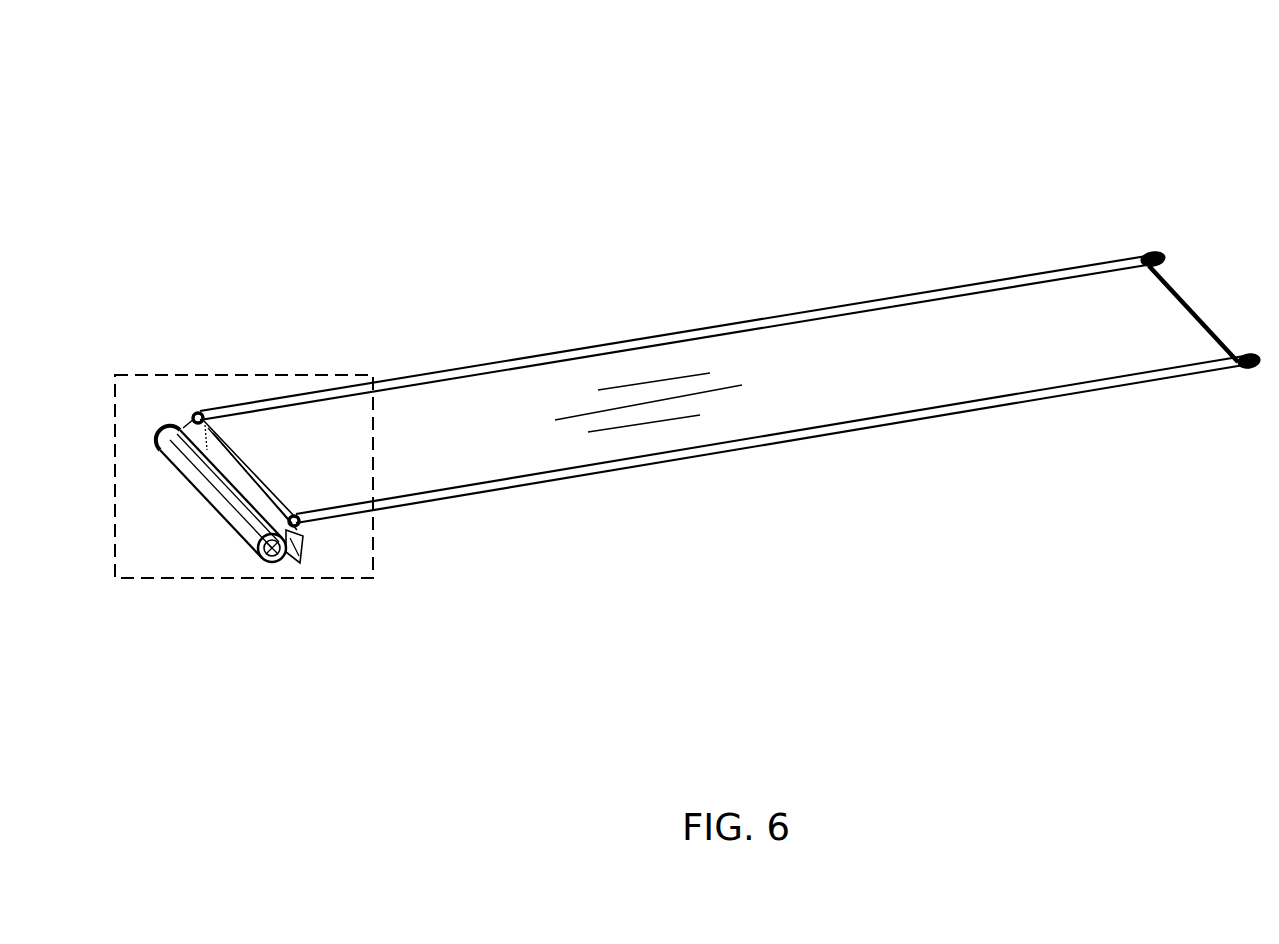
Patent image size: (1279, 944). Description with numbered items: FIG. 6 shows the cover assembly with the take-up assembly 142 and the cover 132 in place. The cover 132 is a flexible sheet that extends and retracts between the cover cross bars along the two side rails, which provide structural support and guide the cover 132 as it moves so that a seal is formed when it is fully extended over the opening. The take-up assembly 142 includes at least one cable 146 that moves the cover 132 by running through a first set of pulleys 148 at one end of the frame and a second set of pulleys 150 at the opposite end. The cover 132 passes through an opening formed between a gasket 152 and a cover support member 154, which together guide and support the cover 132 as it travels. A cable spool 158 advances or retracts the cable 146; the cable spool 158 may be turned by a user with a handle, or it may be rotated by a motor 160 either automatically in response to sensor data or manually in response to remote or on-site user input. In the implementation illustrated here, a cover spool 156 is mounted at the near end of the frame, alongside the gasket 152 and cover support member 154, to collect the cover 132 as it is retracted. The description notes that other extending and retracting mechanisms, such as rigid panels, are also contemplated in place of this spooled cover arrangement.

The take-up assembly 142 is at (516, 166).
The cover 132 is at (950, 290).
The cable 146 is at (763, 319).
The first set of pulleys 148 is at (195, 414).
The second set of pulleys 150 is at (1158, 254).
The gasket 152 is at (247, 440).
The cover support member 154 is at (307, 546).
The cover spool 156 is at (201, 492).
The cable spool 158 is at (260, 562).
The motor 160 is at (279, 565).